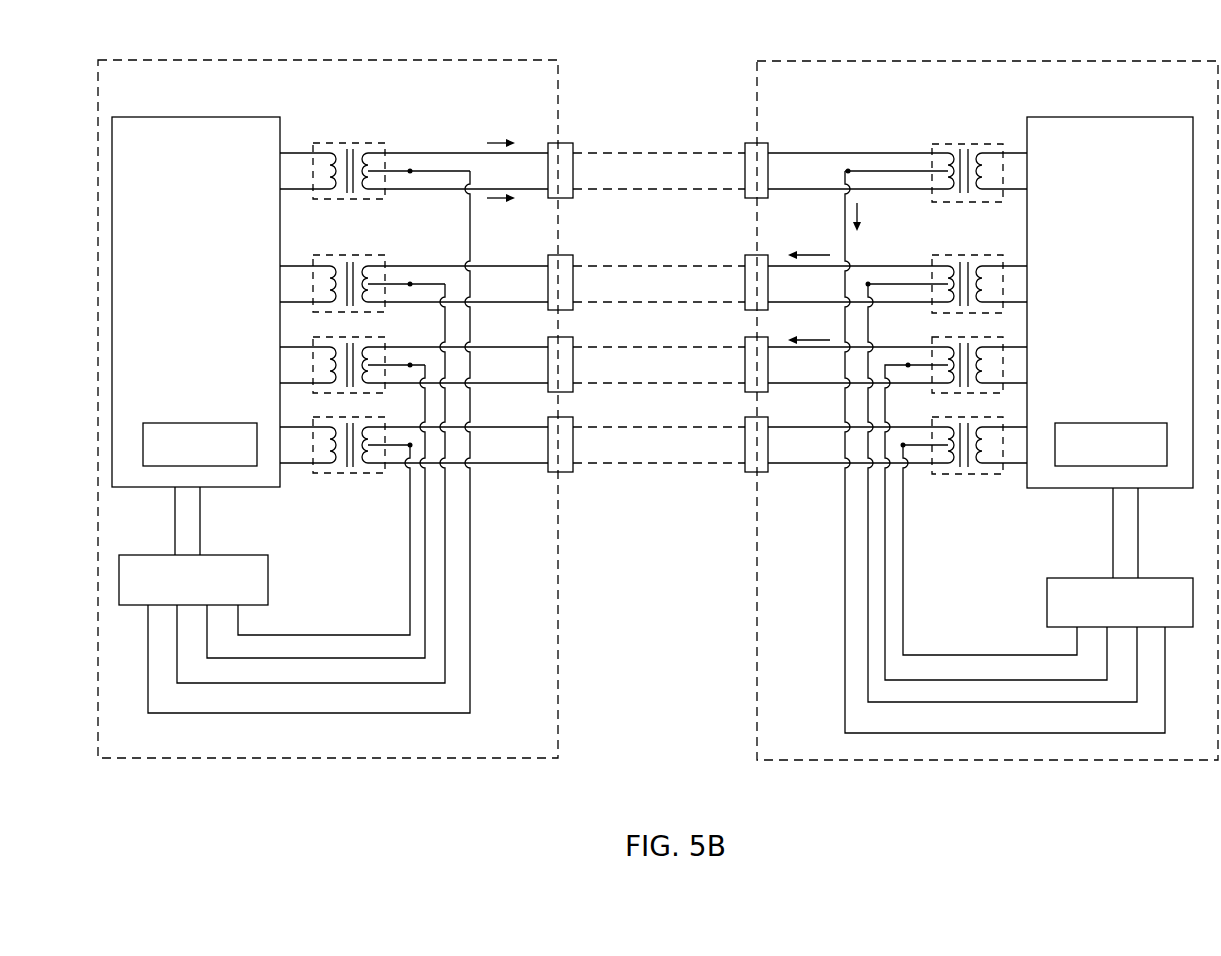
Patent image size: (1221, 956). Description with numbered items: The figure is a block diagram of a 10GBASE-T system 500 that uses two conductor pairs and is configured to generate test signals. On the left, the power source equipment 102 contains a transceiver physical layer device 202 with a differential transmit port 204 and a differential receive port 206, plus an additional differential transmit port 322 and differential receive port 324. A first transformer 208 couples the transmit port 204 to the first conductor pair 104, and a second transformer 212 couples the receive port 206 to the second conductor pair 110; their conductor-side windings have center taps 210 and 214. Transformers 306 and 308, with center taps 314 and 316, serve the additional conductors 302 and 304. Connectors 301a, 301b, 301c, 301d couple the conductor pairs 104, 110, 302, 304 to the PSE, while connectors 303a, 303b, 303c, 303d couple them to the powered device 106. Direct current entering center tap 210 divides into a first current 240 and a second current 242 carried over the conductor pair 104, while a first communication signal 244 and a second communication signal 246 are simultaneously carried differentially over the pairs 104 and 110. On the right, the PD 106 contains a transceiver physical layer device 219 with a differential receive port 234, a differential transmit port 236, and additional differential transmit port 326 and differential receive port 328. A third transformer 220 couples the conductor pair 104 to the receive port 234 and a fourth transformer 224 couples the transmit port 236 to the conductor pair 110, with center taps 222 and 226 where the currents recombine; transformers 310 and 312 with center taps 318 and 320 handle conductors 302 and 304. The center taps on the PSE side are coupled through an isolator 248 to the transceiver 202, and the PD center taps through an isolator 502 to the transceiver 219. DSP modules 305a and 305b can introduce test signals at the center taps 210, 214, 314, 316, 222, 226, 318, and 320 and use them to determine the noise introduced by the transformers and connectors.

The 10GBASE-T system 500 is at (660, 52).
The power source equipment 102 is at (285, 60).
The powered device 106 is at (988, 62).
The transceiver physical layer device 202 is at (199, 117).
The differential transmit port 204 is at (274, 165).
The differential receive port 206 is at (274, 278).
The first transformer 208 is at (348, 143).
The center tap 210 is at (411, 168).
The second transformer 212 is at (348, 254).
The center tap 214 is at (411, 281).
The first current 240 is at (504, 122).
The second current 242 is at (494, 223).
The connector 301a is at (568, 145).
The connector 301b is at (568, 256).
The connector 301c is at (568, 338).
The connector 301d is at (568, 418).
The first conductor pair 104 is at (612, 176).
The second conductor pair 110 is at (612, 288).
The first communication signal 244 is at (683, 160).
The second communication signal 246 is at (683, 272).
The conductor 302 is at (612, 372).
The conductor 304 is at (612, 452).
The connector 303a is at (748, 143).
The connector 303b is at (748, 254).
The connector 303c is at (748, 336).
The connector 303d is at (748, 416).
The transceiver physical layer device 219 is at (1114, 118).
The third transformer 220 is at (967, 144).
The center tap 222 is at (851, 168).
The fourth transformer 224 is at (969, 255).
The center tap 226 is at (871, 281).
The differential receive port 234 is at (1030, 174).
The differential transmit port 236 is at (1030, 288).
The transformer 306 is at (347, 335).
The transformer 308 is at (328, 417).
The transformer 310 is at (960, 339).
The transformer 312 is at (963, 419).
The center tap 314 is at (411, 362).
The center tap 316 is at (410, 442).
The center tap 318 is at (909, 361).
The center tap 320 is at (906, 450).
The differential transmit port 322 is at (274, 363).
The differential receive port 324 is at (280, 445).
The differential transmit port 326 is at (1030, 359).
The differential receive port 328 is at (1028, 439).
The DSP module 305a is at (201, 423).
The DSP module 305b is at (1109, 423).
The isolator 248 is at (269, 559).
The isolator 502 is at (1035, 584).